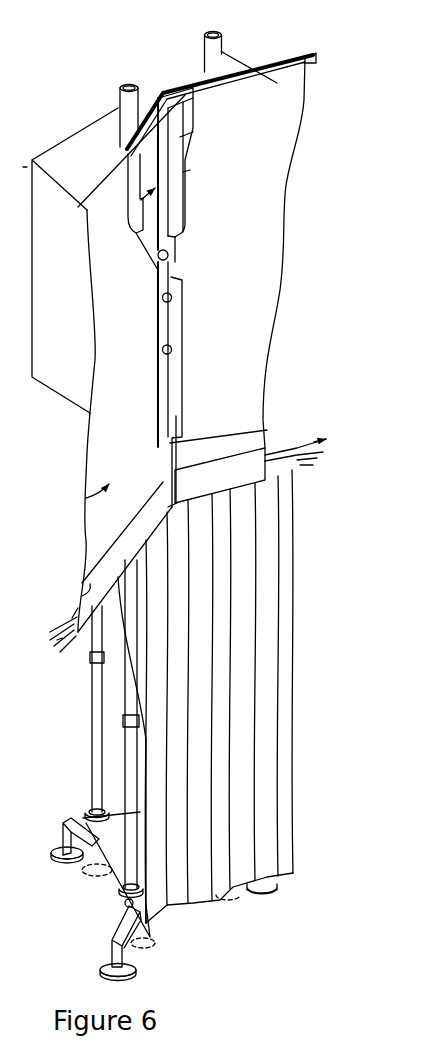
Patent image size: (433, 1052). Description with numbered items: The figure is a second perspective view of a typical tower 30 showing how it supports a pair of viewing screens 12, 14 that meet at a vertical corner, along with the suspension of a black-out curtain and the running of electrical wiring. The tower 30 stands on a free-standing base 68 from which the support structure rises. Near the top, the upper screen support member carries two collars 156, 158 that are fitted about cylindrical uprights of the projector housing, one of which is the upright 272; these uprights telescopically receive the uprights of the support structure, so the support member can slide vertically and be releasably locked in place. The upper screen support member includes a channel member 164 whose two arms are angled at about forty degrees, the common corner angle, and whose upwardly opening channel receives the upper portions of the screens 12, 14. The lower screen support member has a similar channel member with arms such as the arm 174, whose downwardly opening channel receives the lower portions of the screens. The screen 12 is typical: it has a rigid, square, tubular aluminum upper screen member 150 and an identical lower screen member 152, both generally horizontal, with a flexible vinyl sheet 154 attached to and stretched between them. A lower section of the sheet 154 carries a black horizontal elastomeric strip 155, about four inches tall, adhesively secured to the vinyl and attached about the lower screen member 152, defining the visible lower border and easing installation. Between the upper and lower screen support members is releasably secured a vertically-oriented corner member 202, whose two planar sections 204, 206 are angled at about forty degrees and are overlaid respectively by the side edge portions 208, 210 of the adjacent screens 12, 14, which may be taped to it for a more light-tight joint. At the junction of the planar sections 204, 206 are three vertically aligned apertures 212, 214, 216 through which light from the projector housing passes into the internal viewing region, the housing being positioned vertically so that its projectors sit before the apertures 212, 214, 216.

The screen 12 is at (82, 503).
The screen 14 is at (238, 369).
The tower 30 is at (62, 546).
The free-standing base 68 is at (70, 798).
The upper screen member 150 is at (73, 200).
The lower screen member 152 is at (59, 652).
The flexible sheet 154 is at (100, 423).
The horizontal strip 155 is at (80, 598).
The collar 156 is at (224, 51).
The collar 158 is at (142, 87).
The channel member 164 is at (167, 86).
The arm 174 is at (286, 462).
The corner member 202 is at (184, 399).
The planar section 204 is at (164, 160).
The planar section 206 is at (176, 128).
The side edge portion 208 is at (157, 284).
The side edge portion 210 is at (187, 235).
The aperture 212 is at (171, 255).
The aperture 214 is at (175, 300).
The aperture 216 is at (175, 350).
The cylindrical upright 272 is at (129, 158).